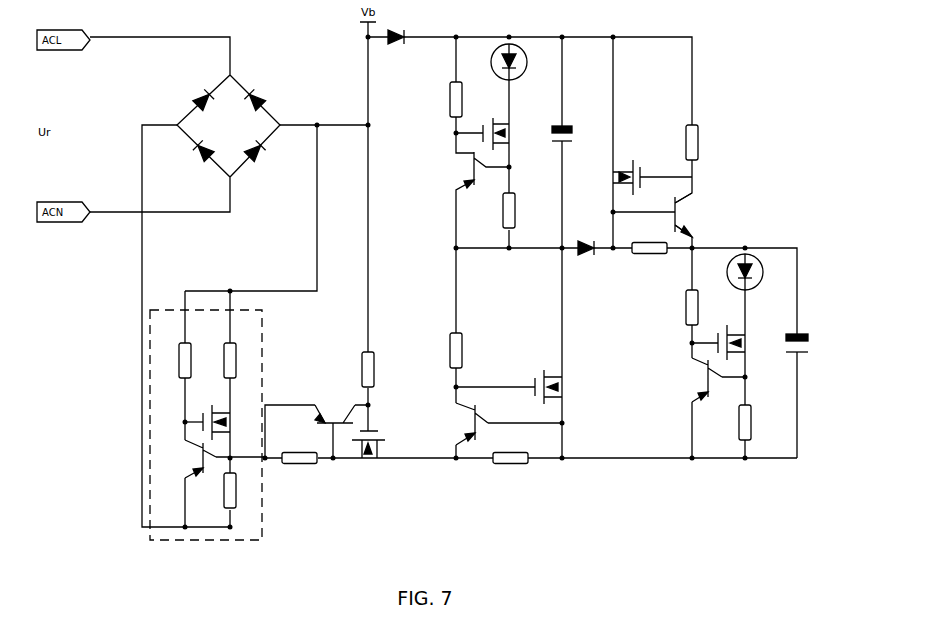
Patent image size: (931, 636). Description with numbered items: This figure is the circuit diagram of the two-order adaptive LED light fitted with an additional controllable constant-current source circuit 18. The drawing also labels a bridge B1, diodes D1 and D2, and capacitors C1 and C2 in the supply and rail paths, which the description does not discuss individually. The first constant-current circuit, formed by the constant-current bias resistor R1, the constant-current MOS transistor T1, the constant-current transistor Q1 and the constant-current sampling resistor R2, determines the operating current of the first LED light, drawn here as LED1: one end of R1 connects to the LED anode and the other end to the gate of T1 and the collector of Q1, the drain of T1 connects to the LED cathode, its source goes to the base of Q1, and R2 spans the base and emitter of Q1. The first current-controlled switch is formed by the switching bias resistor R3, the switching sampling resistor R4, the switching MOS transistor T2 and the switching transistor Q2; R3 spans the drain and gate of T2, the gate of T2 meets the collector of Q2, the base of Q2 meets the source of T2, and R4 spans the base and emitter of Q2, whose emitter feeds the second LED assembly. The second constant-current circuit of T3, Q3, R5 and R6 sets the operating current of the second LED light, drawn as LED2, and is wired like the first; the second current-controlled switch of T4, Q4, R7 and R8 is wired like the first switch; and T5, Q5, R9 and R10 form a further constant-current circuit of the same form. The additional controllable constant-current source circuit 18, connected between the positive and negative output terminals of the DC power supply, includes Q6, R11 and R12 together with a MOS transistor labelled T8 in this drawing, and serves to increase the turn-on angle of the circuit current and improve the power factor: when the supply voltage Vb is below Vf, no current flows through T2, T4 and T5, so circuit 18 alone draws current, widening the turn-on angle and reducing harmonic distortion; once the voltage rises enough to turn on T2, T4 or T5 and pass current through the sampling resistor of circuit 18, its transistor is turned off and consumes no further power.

The additional controllable constant-current source circuit 18 is at (255, 415).
The rectifier bridge B1 is at (187, 127).
The diode D1 is at (406, 28).
The diode D2 is at (586, 255).
The constant-current bias resistor R1 is at (464, 90).
The constant-current sampling resistor R2 is at (517, 203).
The switching bias resistor R3 is at (699, 135).
The switching sampling resistor R4 is at (649, 242).
The resistor of second constant-current circuit R5 is at (699, 300).
The resistor of second constant-current circuit R6 is at (753, 417).
The resistor of second current-controlled switch R7 is at (464, 343).
The resistor of second current-controlled switch R8 is at (510, 467).
The resistor of constant-current circuit R9 is at (376, 369).
The resistor of constant-current circuit R10 is at (299, 466).
The resistor of additional controllable constant-current source circuit R11 is at (243, 490).
The resistor of additional controllable constant-current source circuit R12 is at (173, 360).
The capacitor C1 is at (572, 133).
The capacitor C2 is at (789, 350).
The light emitting diode LED1 is at (520, 71).
The light emitting diode LED2 is at (756, 279).
The constant-current transistor Q1 is at (469, 200).
The switching transistor Q2 is at (694, 215).
The transistor of second constant-current circuit Q3 is at (693, 380).
The transistor of second current-controlled switch Q4 is at (462, 424).
The transistor of constant-current circuit Q5 is at (335, 422).
The transistor of additional controllable constant-current source circuit Q6 is at (193, 459).
The constant-current MOS transistor T1 is at (495, 134).
The switching MOS transistor T2 is at (614, 177).
The MOS transistor of second constant-current circuit T3 is at (743, 342).
The MOS transistor of second current-controlled switch T4 is at (560, 387).
The MOS transistor of constant-current circuit T5 is at (368, 456).
The MOSFET T8 is at (227, 422).